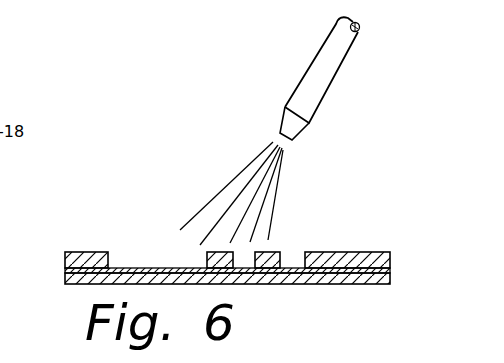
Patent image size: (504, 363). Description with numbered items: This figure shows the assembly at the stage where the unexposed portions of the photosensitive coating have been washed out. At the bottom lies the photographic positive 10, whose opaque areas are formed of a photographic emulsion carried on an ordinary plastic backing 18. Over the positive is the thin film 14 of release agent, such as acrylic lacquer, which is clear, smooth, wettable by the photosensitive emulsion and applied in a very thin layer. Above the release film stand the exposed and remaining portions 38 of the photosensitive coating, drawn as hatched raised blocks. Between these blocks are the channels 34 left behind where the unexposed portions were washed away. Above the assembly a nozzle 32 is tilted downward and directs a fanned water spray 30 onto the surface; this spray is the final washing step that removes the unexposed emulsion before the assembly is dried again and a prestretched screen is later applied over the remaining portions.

The photographic positive 10 is at (226, 272).
The thin film of release agent 14 is at (390, 270).
The plastic backing 18 is at (65, 278).
The water spray 30 is at (277, 192).
The nozzle 32 is at (332, 70).
The channels 34 is at (185, 263).
The exposed and remaining portions of the photosensitive coating 38 is at (65, 258).